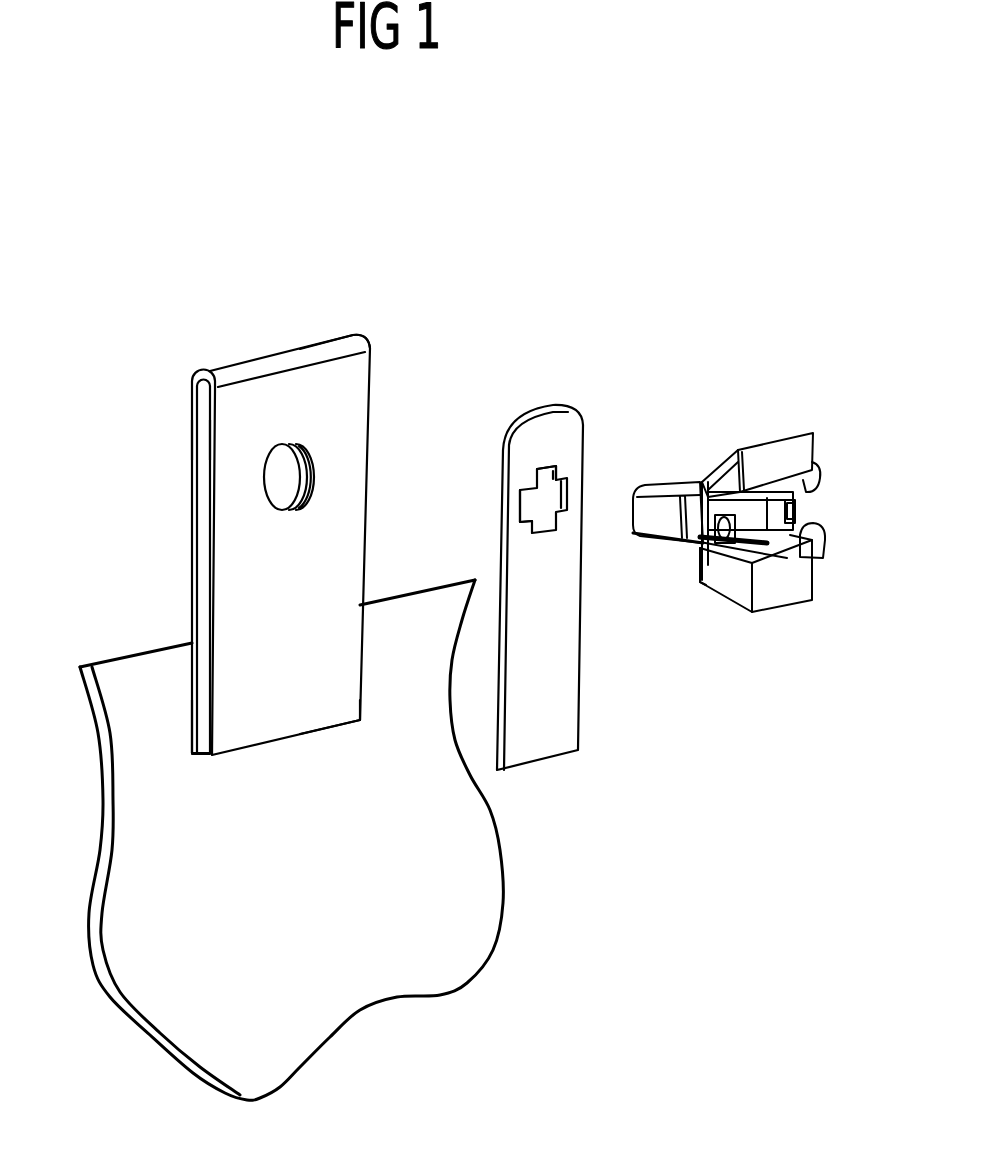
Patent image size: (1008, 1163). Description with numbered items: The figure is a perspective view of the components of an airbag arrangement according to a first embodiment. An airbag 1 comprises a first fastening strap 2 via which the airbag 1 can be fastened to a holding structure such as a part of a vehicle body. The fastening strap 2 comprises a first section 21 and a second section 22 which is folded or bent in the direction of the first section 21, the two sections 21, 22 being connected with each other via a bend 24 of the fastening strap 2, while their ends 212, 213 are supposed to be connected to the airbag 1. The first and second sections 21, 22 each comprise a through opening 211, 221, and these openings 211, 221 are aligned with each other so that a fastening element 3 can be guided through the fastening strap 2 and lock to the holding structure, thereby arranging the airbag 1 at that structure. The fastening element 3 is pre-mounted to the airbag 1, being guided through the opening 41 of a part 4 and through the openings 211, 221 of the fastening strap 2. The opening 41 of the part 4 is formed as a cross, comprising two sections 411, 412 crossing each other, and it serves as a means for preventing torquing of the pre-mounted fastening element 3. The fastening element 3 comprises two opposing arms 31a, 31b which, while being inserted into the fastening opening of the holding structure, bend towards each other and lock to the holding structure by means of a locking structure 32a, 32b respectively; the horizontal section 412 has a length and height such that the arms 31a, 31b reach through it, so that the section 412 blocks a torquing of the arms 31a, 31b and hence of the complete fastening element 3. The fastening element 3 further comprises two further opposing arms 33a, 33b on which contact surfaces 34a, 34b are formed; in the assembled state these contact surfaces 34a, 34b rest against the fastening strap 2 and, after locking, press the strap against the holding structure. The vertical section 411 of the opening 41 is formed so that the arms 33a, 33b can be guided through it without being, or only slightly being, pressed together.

The airbag 1 is at (137, 1037).
The first fastening strap 2 is at (266, 518).
The first section 21 is at (195, 493).
The through opening 211 is at (278, 468).
The end 212 is at (193, 727).
The end 213 is at (350, 682).
The second section 22 is at (337, 548).
The through opening 221 is at (312, 467).
The bend 24 is at (327, 348).
The fastening element 3 is at (752, 523).
The arm 31a is at (652, 527).
The arm 31b is at (790, 512).
The locking structure 32a is at (680, 482).
The locking structure 32b is at (747, 497).
The further arm 33a is at (782, 592).
The further arm 33b is at (785, 450).
The contact surface 34a is at (700, 582).
The contact surface 34b is at (823, 548).
The part 4 is at (534, 549).
The opening 41 is at (570, 487).
The section 411 is at (542, 468).
The section 412 is at (523, 503).